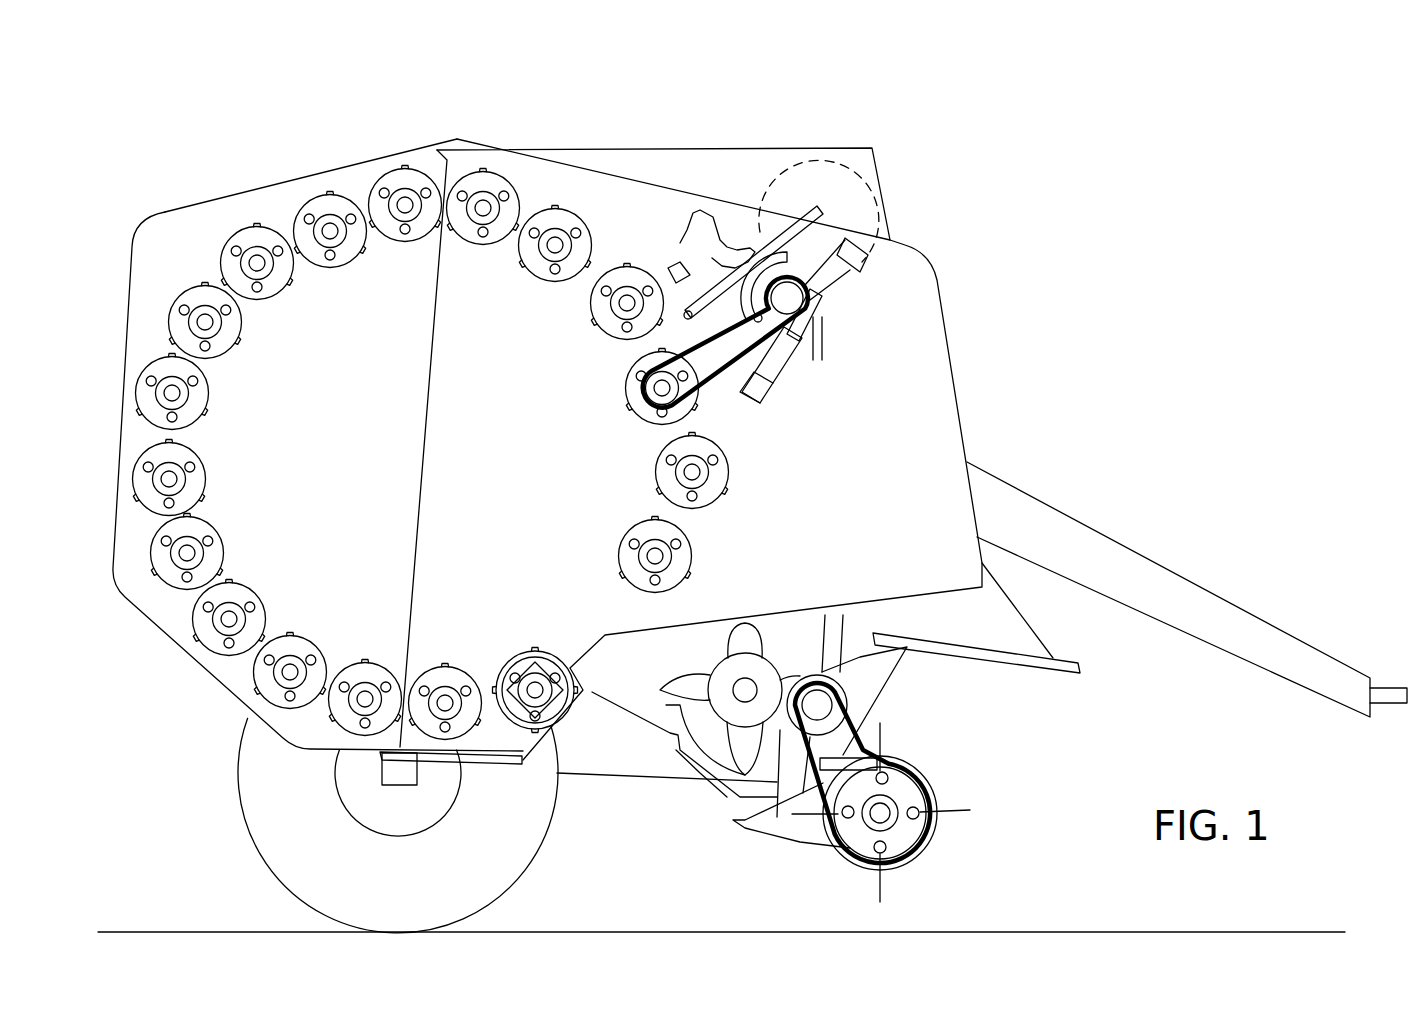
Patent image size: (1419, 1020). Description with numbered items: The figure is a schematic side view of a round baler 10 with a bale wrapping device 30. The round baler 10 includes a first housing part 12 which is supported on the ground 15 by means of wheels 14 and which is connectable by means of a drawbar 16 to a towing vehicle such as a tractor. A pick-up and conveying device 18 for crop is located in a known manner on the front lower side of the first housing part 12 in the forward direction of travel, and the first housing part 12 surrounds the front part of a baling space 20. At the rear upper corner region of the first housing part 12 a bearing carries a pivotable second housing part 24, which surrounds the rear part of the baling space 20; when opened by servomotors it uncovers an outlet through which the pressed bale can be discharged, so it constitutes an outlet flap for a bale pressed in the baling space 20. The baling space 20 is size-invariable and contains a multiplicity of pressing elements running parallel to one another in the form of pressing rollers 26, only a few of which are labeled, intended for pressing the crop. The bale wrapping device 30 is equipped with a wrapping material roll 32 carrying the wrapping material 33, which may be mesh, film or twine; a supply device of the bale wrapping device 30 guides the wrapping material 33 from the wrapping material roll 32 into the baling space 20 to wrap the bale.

The round baler 10 is at (266, 118).
The first housing part 12 is at (556, 453).
The wheels 14 is at (283, 810).
The ground 15 is at (1285, 931).
The drawbar 16 is at (1243, 637).
The pick-up and conveying device 18 is at (718, 834).
The baling space 20 is at (482, 298).
The second housing part 24 is at (342, 449).
The pressing rollers 26 is at (234, 327).
The bale wrapping device 30 is at (745, 188).
The wrapping material roll 32 is at (850, 186).
The wrapping material 33 is at (803, 160).